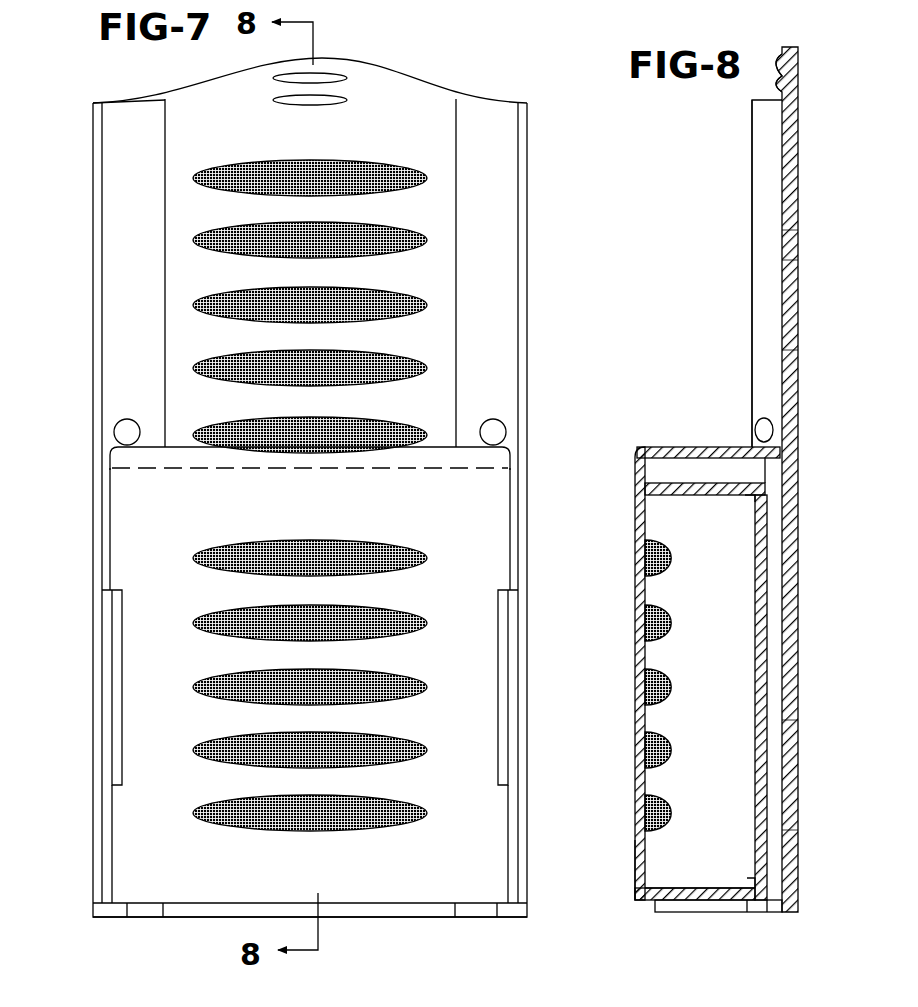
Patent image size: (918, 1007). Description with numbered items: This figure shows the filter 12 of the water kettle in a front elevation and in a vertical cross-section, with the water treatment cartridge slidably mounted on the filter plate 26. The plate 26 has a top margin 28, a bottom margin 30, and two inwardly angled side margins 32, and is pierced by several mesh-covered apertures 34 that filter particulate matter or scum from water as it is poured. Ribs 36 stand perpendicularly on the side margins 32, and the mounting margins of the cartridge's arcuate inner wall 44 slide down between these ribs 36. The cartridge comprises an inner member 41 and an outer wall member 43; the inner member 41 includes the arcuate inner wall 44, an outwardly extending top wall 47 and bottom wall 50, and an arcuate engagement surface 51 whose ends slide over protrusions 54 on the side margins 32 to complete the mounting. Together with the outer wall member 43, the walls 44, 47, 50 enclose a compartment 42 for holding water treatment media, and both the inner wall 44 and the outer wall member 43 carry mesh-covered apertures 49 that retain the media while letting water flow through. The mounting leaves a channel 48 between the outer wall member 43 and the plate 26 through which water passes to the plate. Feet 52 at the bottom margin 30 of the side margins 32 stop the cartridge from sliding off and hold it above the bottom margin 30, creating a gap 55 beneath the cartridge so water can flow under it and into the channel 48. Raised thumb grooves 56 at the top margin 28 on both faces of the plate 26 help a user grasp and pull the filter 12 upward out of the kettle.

In FIG. 7, the filter 12 is at (503, 90).
In FIG. 8, the filter 12 is at (740, 131).
In FIG. 7, the filter plate 26 is at (425, 82).
In FIG. 8, the filter plate 26 is at (796, 520).
In FIG. 7, the top margin 28 is at (194, 85).
In FIG. 7, the bottom margin 30 is at (438, 918).
In FIG. 7, the side margins 32 is at (112, 170).
In FIG. 8, the side margins 32 is at (756, 205).
In FIG. 7, the mesh-covered apertures 34 is at (197, 242).
In FIG. 8, the mesh-covered apertures 34 is at (795, 352).
In FIG. 7, the ribs 36 is at (113, 635).
In FIG. 8, the inner member 41 is at (631, 857).
In FIG. 8, the compartment 42 is at (676, 857).
In FIG. 8, the outer wall member 43 is at (757, 872).
In FIG. 7, the arcuate inner wall 44 is at (500, 518).
In FIG. 8, the arcuate inner wall 44 is at (635, 532).
In FIG. 8, the top wall 47 is at (668, 485).
In FIG. 8, the channel 48 is at (778, 690).
In FIG. 7, the mesh-covered apertures 49 is at (418, 748).
In FIG. 8, the mesh-covered apertures 49 is at (640, 685).
In FIG. 8, the bottom wall 50 is at (668, 893).
In FIG. 7, the arcuate engagement surface 51 is at (508, 455).
In FIG. 8, the arcuate engagement surface 51 is at (665, 447).
In FIG. 7, the feet 52 is at (118, 918).
In FIG. 8, the feet 52 is at (765, 912).
In FIG. 7, the protrusions 54 is at (118, 423).
In FIG. 8, the protrusions 54 is at (762, 420).
In FIG. 7, the gap 55 is at (402, 917).
In FIG. 8, the gap 55 is at (725, 912).
In FIG. 7, the thumb grooves 56 is at (344, 100).
In FIG. 8, the thumb grooves 56 is at (797, 78).